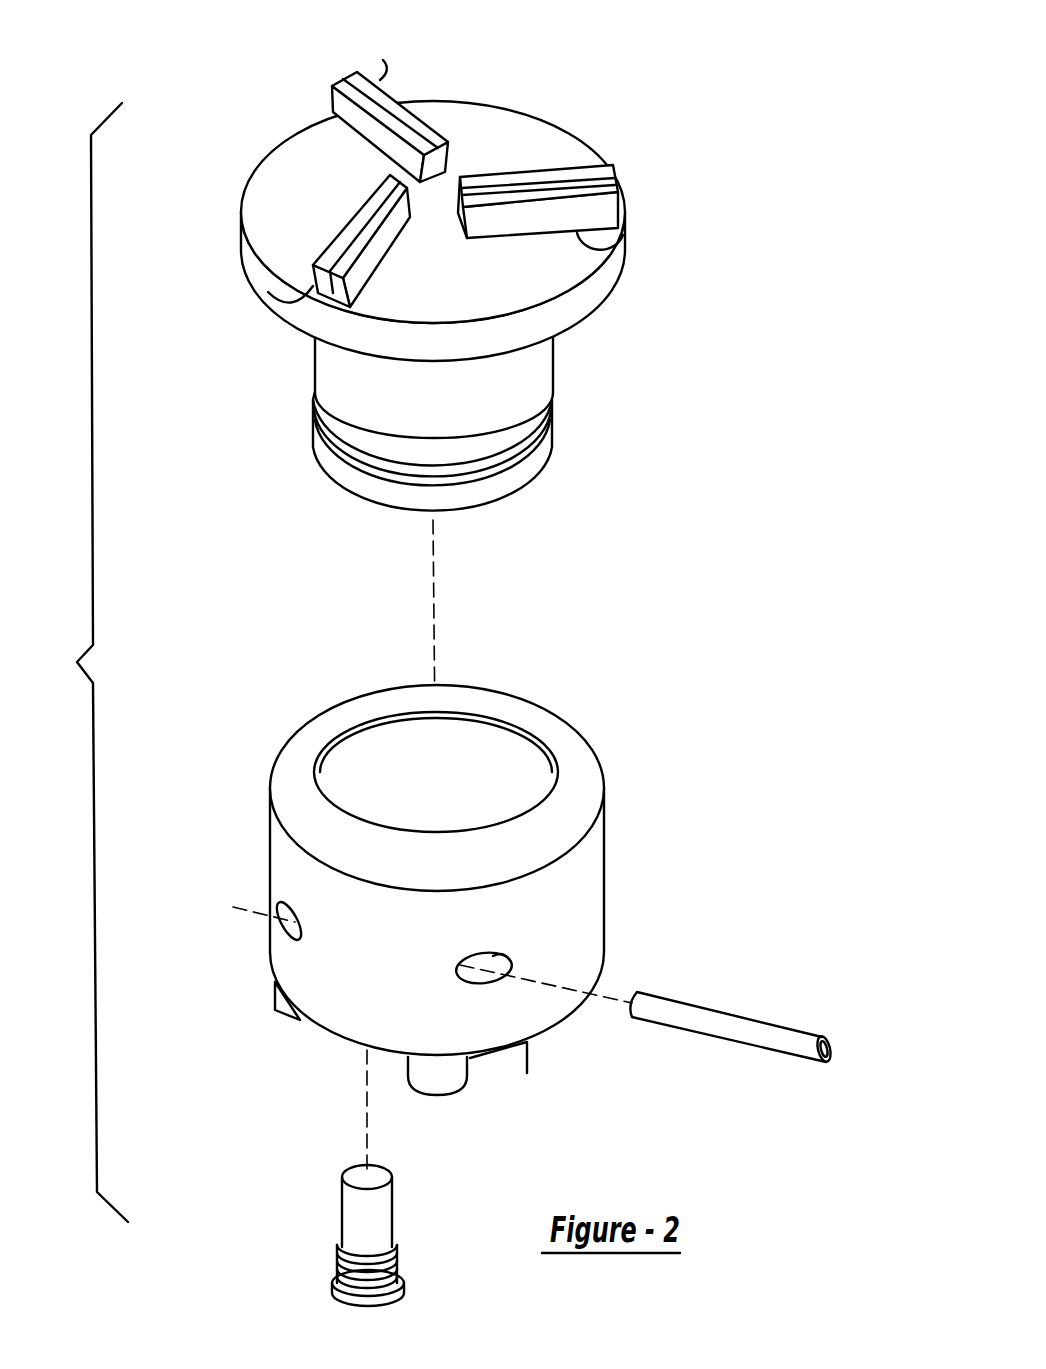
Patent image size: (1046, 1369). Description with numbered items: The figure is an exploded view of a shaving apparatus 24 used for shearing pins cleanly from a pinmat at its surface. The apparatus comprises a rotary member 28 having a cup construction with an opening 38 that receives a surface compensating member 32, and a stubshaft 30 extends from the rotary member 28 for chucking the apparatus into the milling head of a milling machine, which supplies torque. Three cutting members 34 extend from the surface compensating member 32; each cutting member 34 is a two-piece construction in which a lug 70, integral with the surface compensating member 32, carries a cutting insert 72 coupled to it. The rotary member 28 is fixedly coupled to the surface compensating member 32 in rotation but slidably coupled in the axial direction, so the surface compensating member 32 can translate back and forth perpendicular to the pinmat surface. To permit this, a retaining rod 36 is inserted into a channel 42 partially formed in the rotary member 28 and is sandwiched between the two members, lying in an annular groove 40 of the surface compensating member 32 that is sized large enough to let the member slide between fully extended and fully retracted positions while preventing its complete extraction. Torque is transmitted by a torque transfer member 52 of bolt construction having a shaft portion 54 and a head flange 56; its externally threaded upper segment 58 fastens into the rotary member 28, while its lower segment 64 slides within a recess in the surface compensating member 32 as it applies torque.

The shaving apparatus 24 is at (89, 662).
The rotary member 28 is at (428, 887).
The stubshaft 30 is at (450, 1093).
The surface compensating member 32 is at (437, 316).
The cutting member 34 is at (484, 159).
The retaining rod 36 is at (803, 1012).
The opening 38 is at (330, 787).
The annular groove 40 is at (547, 413).
The channel 42 is at (277, 917).
The torque transfer member 52 is at (374, 1240).
The shaft portion 54 is at (416, 1226).
The head flange 56 is at (388, 1300).
The upper segment 58 is at (392, 1261).
The lower segment 64 is at (407, 1168).
The lug 70 is at (380, 82).
The cutting insert 72 is at (331, 78).